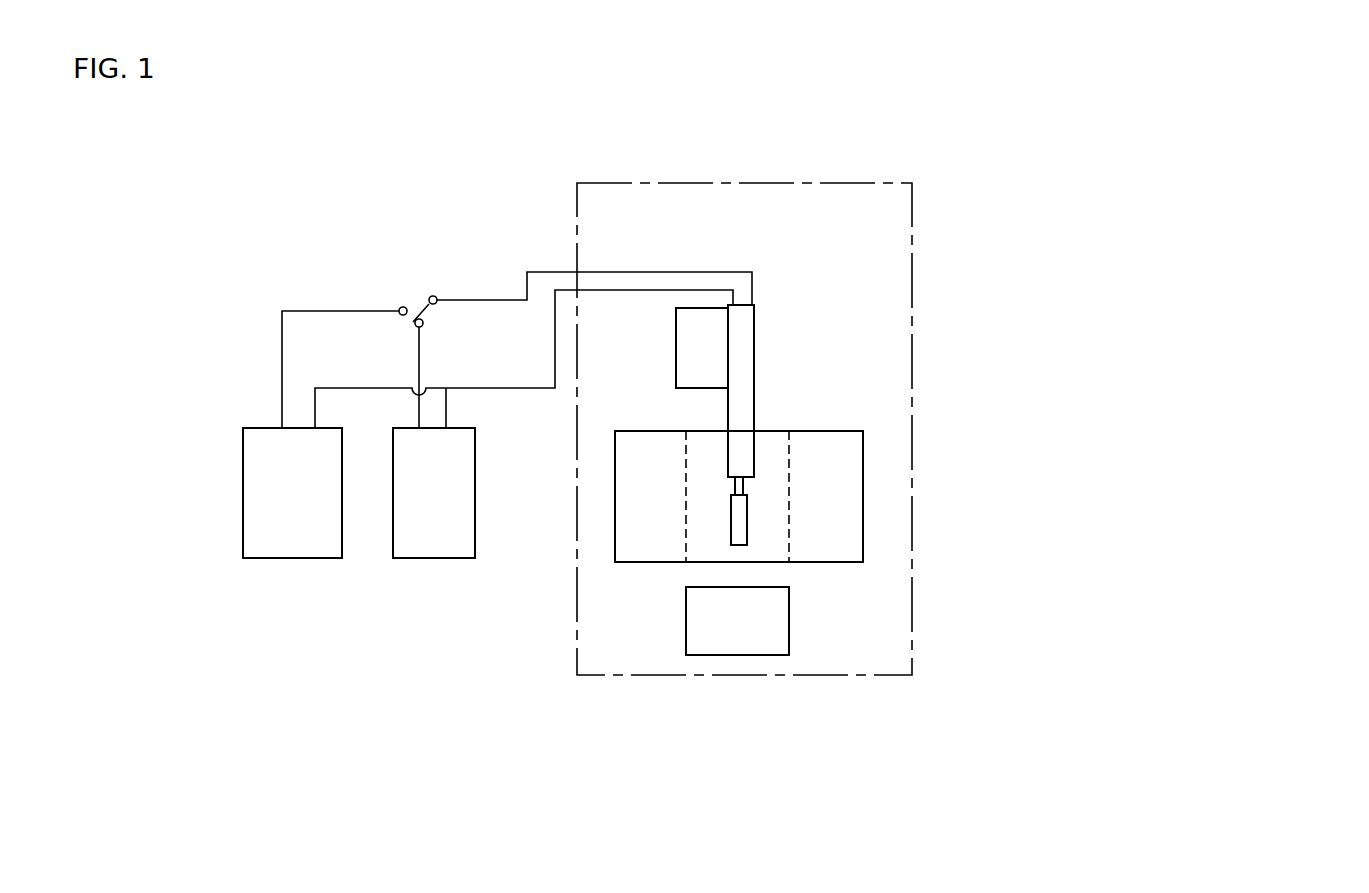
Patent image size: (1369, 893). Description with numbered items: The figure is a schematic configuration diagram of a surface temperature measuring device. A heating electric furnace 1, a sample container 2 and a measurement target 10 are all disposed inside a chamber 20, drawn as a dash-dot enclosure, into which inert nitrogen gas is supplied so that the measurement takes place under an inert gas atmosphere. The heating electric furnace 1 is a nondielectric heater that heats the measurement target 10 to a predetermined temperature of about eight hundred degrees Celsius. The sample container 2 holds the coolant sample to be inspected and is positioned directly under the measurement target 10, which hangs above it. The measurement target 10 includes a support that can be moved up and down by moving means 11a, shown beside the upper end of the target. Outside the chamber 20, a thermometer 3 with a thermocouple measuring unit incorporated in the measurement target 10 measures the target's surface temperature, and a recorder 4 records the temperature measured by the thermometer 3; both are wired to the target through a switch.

The heating electric furnace 1 is at (833, 498).
The sample container 2 is at (743, 638).
The thermometer 3 is at (430, 547).
The recorder 4 is at (252, 498).
The measurement target 10 is at (755, 392).
The moving means 11a is at (703, 322).
The chamber 20 is at (757, 208).